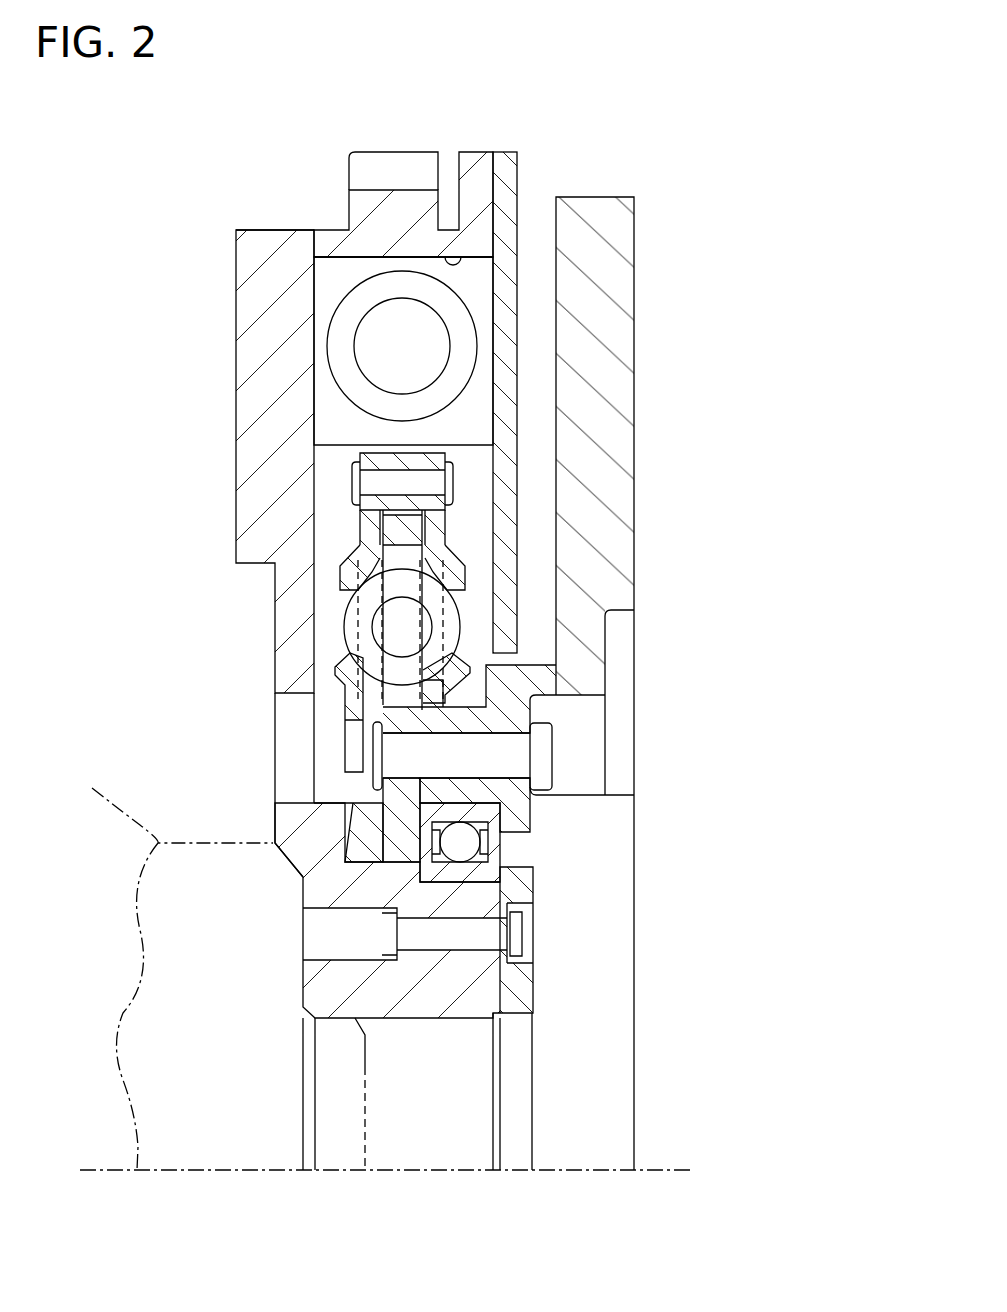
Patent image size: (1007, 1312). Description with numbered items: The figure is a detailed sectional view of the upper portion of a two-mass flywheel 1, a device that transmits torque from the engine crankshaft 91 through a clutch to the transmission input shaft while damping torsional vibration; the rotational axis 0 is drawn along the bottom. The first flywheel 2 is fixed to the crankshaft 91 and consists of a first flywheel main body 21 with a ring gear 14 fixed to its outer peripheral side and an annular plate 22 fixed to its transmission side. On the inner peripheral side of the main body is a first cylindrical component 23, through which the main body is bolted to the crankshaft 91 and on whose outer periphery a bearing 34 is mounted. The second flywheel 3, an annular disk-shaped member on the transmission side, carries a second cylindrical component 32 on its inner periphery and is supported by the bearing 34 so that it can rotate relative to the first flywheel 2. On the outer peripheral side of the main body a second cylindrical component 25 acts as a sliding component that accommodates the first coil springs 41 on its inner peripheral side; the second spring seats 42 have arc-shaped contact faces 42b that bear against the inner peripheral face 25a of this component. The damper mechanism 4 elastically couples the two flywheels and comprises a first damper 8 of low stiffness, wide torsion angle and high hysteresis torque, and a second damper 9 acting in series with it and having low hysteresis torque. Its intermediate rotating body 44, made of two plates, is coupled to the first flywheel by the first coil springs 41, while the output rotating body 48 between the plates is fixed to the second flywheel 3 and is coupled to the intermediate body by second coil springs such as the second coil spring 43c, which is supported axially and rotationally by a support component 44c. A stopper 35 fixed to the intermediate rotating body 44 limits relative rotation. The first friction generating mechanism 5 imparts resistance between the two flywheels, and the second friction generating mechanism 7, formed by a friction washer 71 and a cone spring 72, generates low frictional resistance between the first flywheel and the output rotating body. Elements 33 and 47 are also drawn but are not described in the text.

The two-mass flywheel 1 is at (740, 96).
The first flywheel 2 is at (230, 229).
The second flywheel 3 is at (642, 227).
The damper mechanism 4 is at (477, 607).
The first friction generating mechanism 5 is at (337, 240).
The second friction generating mechanism 7 is at (345, 790).
The first damper 8 is at (303, 278).
The second damper 9 is at (477, 637).
The ring gear 14 is at (390, 160).
The first flywheel main body 21 is at (267, 323).
The annular plate 22 is at (505, 202).
The first cylindrical component 23 is at (477, 895).
The second cylindrical component 25 is at (413, 238).
The inner peripheral face 25a is at (445, 257).
The second cylindrical component 32 is at (473, 715).
The shaft 33 is at (490, 743).
The bearing 34 is at (507, 849).
The stopper 35 is at (413, 463).
The first coil springs 41 is at (338, 338).
The second spring seats 42 is at (332, 410).
The contact face 42b is at (365, 257).
The second coil spring 43c is at (353, 610).
The intermediate rotating body 44 is at (358, 518).
The support component 44c is at (453, 558).
The pin 47 is at (373, 480).
The output rotating body 48 is at (400, 717).
The friction washer 71 is at (377, 817).
The cone spring 72 is at (352, 828).
The crankshaft 91 is at (165, 962).
The axis 0 is at (386, 1172).